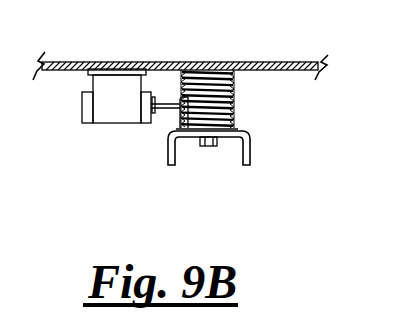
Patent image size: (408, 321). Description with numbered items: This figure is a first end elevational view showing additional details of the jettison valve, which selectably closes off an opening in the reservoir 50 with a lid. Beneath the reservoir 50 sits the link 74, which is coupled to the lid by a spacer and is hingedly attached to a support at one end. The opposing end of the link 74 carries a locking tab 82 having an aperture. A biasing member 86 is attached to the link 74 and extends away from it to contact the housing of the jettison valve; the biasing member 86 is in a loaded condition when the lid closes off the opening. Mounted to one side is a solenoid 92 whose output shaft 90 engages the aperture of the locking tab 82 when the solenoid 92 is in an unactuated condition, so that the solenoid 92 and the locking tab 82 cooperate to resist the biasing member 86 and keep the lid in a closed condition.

The reservoir 50 is at (270, 62).
The solenoid 92 is at (80, 105).
The output shaft 90 is at (160, 111).
The locking tab 82 is at (179, 118).
The biasing member 86 is at (235, 117).
The link 74 is at (248, 158).